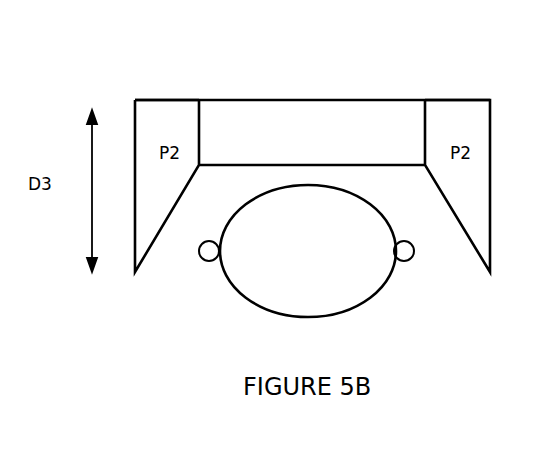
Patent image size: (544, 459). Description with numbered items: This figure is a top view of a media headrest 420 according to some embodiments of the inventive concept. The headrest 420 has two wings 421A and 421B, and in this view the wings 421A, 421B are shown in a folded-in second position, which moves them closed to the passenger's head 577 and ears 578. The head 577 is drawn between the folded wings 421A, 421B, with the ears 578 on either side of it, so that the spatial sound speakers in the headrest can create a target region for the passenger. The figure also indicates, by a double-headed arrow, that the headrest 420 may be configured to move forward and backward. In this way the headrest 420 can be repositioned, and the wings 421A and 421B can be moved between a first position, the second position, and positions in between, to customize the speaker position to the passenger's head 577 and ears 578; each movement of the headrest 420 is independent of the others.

The headrest 420 is at (406, 77).
The wing 421A is at (167, 83).
The wing 421B is at (457, 83).
The passenger's head 577 is at (308, 251).
The ears 578 is at (201, 258).